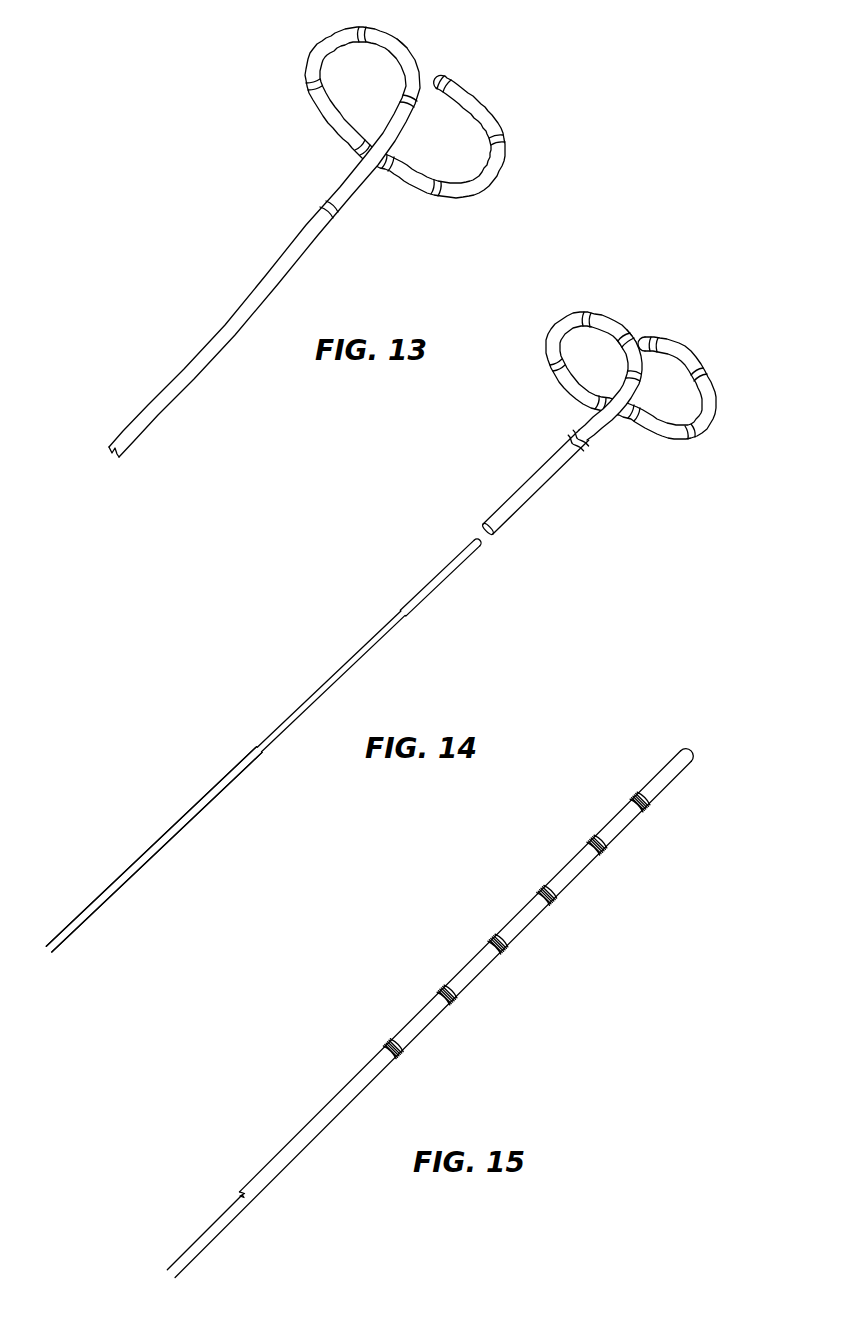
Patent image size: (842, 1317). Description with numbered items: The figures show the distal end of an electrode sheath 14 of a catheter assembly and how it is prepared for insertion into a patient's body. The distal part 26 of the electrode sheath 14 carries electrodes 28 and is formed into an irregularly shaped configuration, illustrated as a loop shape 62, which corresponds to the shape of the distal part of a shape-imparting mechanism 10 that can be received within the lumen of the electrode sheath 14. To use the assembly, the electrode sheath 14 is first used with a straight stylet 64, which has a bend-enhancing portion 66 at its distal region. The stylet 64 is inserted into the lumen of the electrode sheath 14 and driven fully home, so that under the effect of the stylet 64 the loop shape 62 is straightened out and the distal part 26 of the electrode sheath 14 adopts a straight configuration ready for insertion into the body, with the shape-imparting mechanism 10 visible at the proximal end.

In FIG. 15, the shape-imparting mechanism 10 is at (217, 1237).
In FIG. 13, the electrode sheath 14 is at (264, 248).
In FIG. 14, the electrode sheath 14 is at (541, 488).
In FIG. 15, the electrode sheath 14 is at (434, 1013).
In FIG. 13, the distal part 26 is at (409, 155).
In FIG. 14, the distal part 26 is at (662, 417).
In FIG. 15, the distal part 26 is at (638, 853).
In FIG. 13, the electrodes 28 is at (322, 209).
In FIG. 13, the loop shape 62 is at (434, 72).
In FIG. 14, the loop shape 62 is at (702, 355).
In FIG. 14, the straight stylet 64 is at (202, 842).
In FIG. 14, the bend-enhancing portion 66 is at (386, 633).